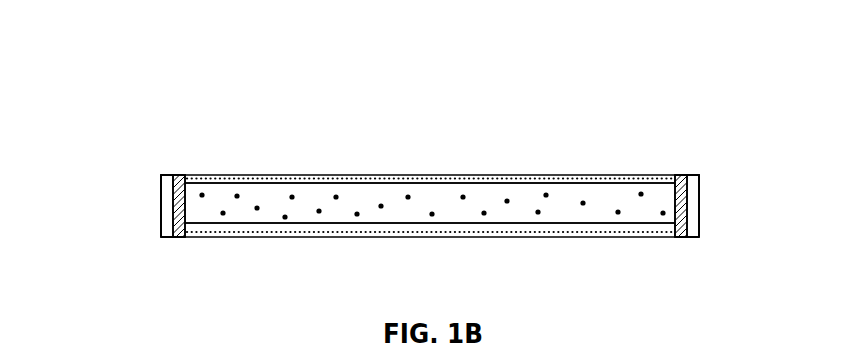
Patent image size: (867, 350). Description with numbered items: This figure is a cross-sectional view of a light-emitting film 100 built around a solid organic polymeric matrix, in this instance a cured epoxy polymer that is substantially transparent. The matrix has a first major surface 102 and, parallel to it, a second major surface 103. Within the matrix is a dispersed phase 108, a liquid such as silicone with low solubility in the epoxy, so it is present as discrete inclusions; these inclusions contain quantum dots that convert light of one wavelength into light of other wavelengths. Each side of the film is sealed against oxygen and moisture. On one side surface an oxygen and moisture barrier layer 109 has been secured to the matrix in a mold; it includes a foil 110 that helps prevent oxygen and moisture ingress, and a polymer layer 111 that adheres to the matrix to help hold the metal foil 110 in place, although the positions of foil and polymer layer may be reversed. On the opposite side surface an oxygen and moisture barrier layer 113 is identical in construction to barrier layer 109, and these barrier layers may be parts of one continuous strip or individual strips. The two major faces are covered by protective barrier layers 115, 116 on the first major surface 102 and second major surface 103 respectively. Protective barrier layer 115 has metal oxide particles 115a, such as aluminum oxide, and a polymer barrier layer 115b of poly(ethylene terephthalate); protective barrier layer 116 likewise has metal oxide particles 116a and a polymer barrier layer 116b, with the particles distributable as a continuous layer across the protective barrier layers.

The light-emitting film 100 is at (121, 23).
The first major surface 102 is at (585, 175).
The second major surface 103 is at (617, 237).
The dispersed phase 108 is at (381, 205).
The oxygen and moisture barrier layer 109 is at (93, 102).
The foil 110 is at (178, 174).
The polymer layer 111 is at (168, 174).
The oxygen and moisture barrier layer 113 is at (642, 98).
The protective barrier layer 115 is at (482, 175).
The metal oxide particles 115a is at (327, 175).
The polymer barrier layer 115b is at (543, 175).
The protective barrier layer 116 is at (542, 237).
The metal oxide particles 116a is at (220, 235).
The polymer barrier layer 116b is at (293, 235).